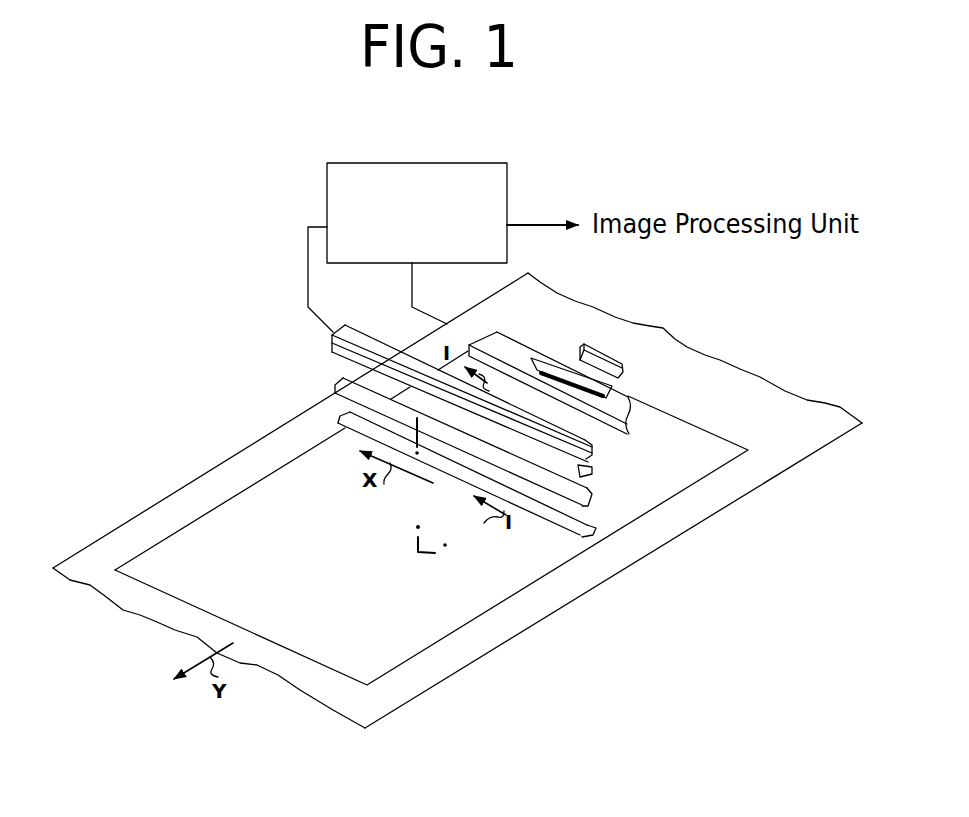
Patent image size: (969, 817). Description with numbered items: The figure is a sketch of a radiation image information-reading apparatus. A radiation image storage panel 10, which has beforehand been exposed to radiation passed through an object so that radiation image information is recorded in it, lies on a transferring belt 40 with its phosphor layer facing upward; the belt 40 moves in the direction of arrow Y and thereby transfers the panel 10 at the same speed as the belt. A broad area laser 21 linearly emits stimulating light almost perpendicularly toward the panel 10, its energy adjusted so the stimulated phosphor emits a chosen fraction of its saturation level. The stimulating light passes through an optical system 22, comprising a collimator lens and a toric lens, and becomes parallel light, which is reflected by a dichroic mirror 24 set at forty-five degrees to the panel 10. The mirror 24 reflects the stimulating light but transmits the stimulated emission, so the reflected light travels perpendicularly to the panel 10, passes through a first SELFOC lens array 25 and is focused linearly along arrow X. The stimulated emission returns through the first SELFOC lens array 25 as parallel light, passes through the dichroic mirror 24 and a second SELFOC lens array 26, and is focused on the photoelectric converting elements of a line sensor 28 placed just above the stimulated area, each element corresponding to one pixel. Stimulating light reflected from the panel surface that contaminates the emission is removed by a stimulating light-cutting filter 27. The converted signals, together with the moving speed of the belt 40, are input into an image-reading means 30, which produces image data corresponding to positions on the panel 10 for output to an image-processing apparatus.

The radiation image storage panel 10 is at (441, 627).
The broad area laser 21 is at (582, 347).
The optical system 22 is at (640, 416).
The dichroic mirror 24 is at (342, 393).
The first SELFOC lens array 25 is at (343, 409).
The second SELFOC lens array 26 is at (594, 471).
The stimulating light-cutting filter 27 is at (597, 456).
The line sensor 28 is at (355, 333).
The image-reading means 30 is at (507, 202).
The transferring belt 40 is at (770, 384).